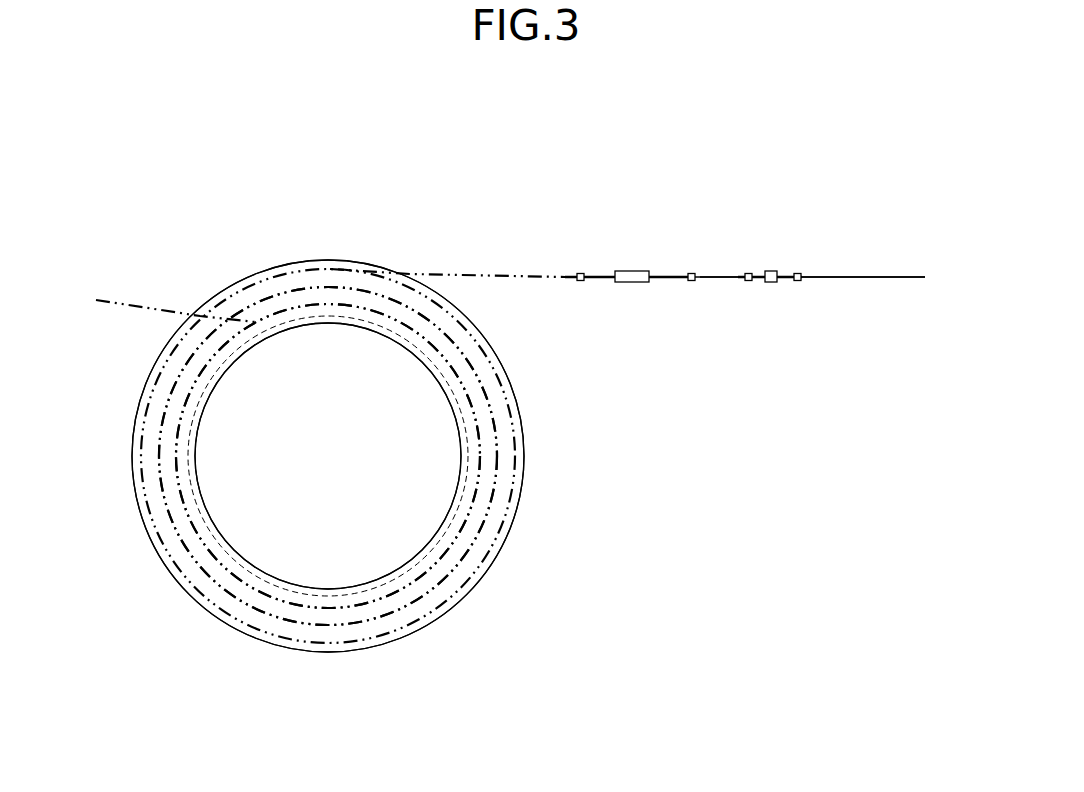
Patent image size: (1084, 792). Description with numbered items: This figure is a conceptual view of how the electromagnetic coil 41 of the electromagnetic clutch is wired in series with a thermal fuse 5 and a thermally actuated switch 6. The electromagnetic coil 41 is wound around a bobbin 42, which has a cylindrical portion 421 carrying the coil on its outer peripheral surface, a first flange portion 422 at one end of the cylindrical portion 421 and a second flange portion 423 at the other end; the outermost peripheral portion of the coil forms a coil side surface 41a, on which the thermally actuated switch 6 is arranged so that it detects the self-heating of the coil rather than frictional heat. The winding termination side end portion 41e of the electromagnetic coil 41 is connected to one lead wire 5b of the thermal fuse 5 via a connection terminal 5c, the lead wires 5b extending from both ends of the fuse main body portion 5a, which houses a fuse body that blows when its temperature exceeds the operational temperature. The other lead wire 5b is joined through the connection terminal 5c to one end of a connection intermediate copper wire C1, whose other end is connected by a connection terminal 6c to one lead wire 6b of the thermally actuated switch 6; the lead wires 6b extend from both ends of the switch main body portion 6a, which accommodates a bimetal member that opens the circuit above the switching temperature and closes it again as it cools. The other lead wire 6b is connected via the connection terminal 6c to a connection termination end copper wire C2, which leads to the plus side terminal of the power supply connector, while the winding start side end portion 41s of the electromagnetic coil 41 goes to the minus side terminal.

The electromagnetic coil 41 is at (170, 560).
The coil side surface 41a is at (521, 471).
The winding start side end portion 41s is at (132, 316).
The winding termination side end portion 41e is at (480, 280).
The bobbin 42 is at (319, 422).
The cylindrical portion 421 is at (250, 568).
The first flange portion 422 is at (425, 611).
The second flange portion 423 is at (362, 482).
The thermal fuse 5 is at (624, 260).
The fuse main body portion 5a is at (633, 270).
The lead wires 5b is at (593, 273).
The connection terminal 5c is at (690, 282).
The thermally actuated switch 6 is at (778, 260).
The switch main body portion 6a is at (770, 270).
The lead wires 6b is at (762, 272).
The connection terminal 6c is at (797, 283).
The connection intermediate copper wire C1 is at (712, 280).
The connection termination end copper wire C2 is at (868, 280).